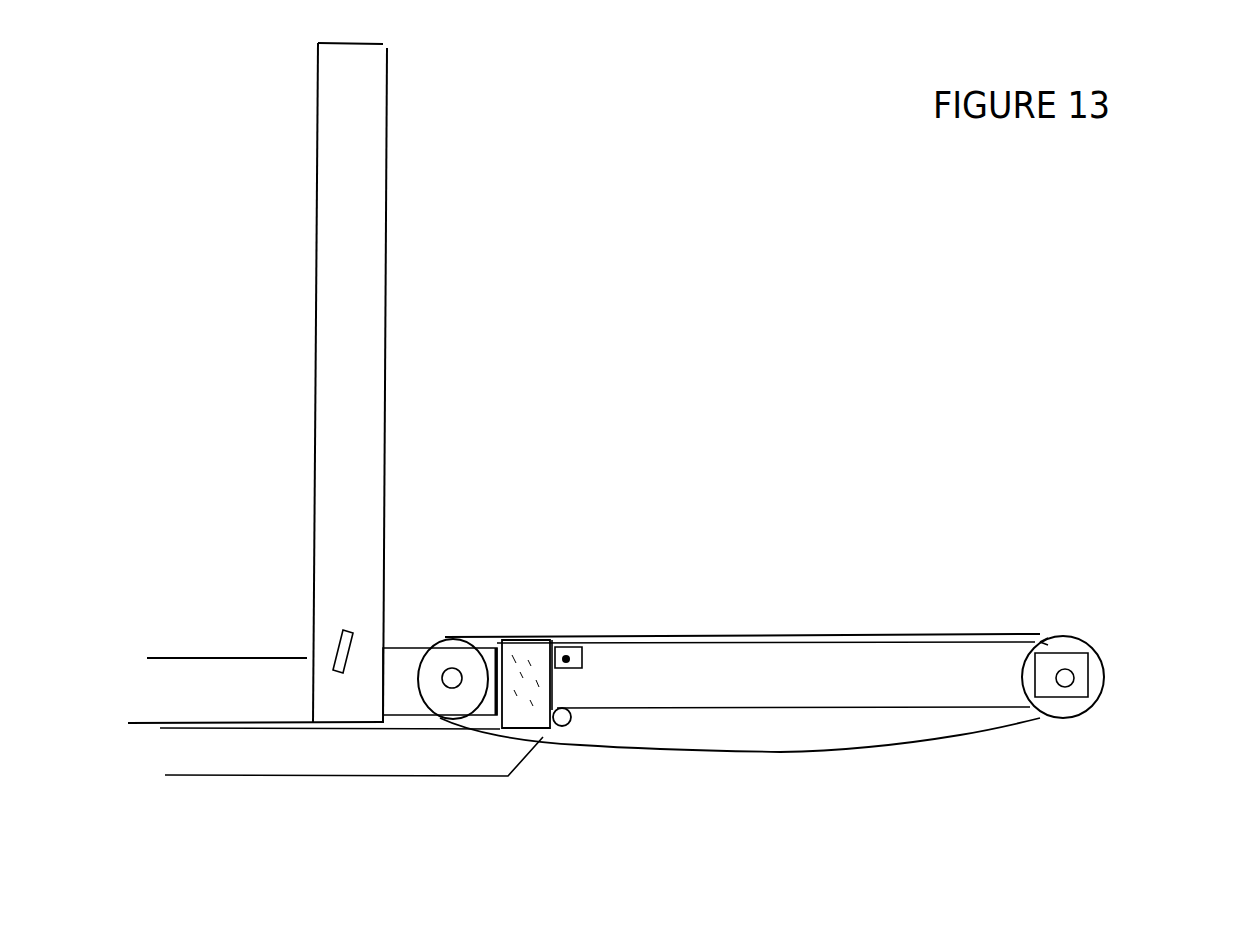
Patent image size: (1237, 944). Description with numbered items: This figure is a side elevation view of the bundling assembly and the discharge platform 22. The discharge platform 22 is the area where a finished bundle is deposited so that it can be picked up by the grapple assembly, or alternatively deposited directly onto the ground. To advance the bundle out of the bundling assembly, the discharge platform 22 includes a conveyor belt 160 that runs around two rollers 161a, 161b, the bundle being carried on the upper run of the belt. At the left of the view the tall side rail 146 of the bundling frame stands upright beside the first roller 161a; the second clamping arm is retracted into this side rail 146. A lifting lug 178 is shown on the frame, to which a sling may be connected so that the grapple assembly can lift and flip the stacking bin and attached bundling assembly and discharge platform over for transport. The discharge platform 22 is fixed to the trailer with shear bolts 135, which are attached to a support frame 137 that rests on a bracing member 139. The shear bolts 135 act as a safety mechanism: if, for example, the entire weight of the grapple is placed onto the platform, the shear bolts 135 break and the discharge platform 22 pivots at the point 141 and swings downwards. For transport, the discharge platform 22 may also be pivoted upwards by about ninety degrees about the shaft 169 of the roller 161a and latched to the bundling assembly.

The side rail 146 is at (352, 337).
The lifting lug 178 is at (342, 632).
The shaft 169 is at (455, 672).
The roller 161a is at (442, 662).
The shear bolts 135 is at (568, 650).
The support frame 137 is at (530, 707).
The pivot point 141 is at (568, 724).
The bracing member 139 is at (310, 765).
The discharge platform 22 is at (897, 653).
The conveyor belt 160 is at (785, 753).
The roller 161b is at (1082, 635).